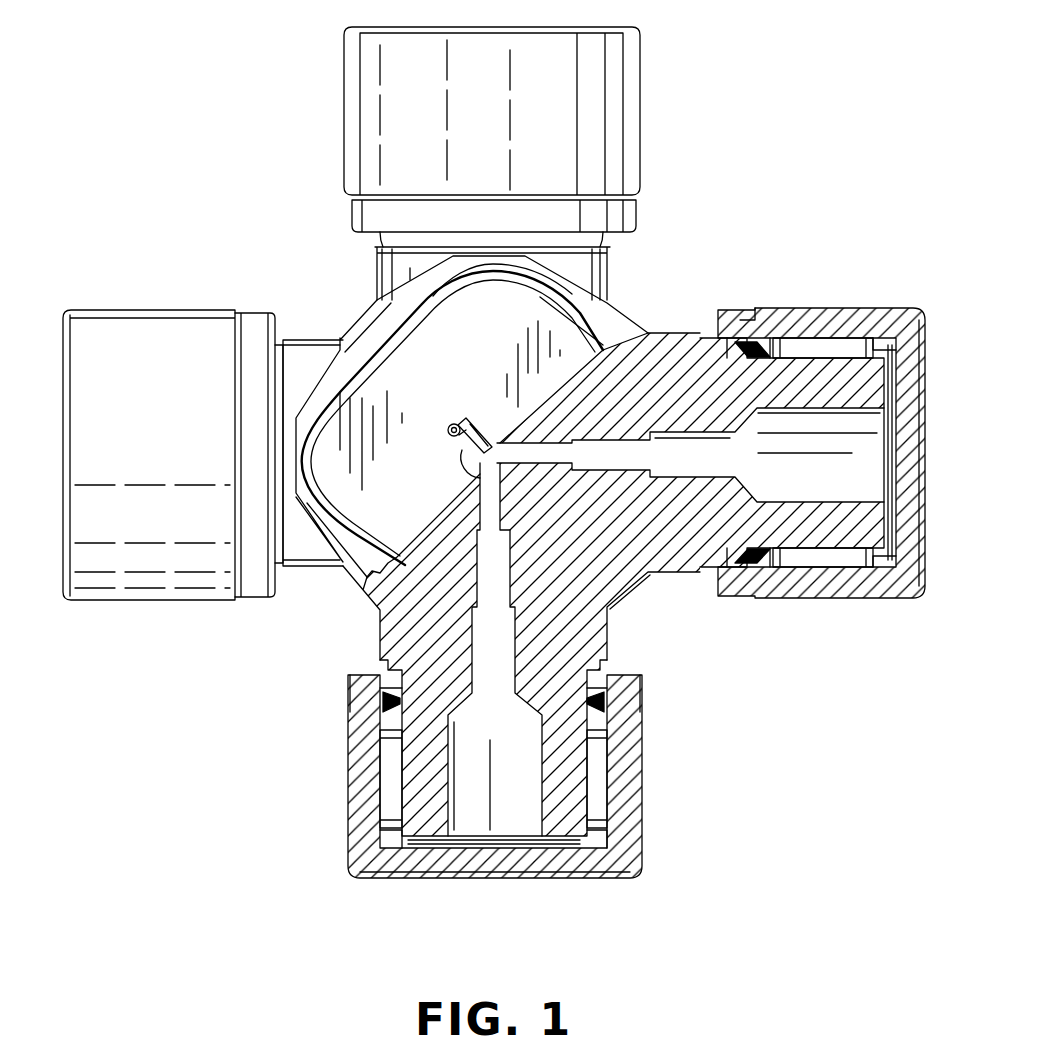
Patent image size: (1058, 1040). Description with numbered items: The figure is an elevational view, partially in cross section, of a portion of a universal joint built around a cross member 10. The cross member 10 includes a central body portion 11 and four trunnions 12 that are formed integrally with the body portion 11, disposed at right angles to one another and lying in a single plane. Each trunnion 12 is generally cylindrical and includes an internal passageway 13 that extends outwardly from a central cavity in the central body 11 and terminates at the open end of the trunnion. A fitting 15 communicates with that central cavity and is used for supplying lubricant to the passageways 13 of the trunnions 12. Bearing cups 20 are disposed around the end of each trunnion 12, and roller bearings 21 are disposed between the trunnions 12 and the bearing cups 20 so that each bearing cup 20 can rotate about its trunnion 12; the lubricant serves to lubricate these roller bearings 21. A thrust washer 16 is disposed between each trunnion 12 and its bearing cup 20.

The cross member 10 is at (496, 487).
The central body portion 11 is at (362, 343).
The trunnion 12 is at (823, 373).
The internal passageway 13 is at (831, 490).
The fitting 15 is at (468, 428).
The thrust washer 16 is at (913, 598).
The bearing cup 20 is at (646, 70).
The roller bearings 21 is at (850, 566).